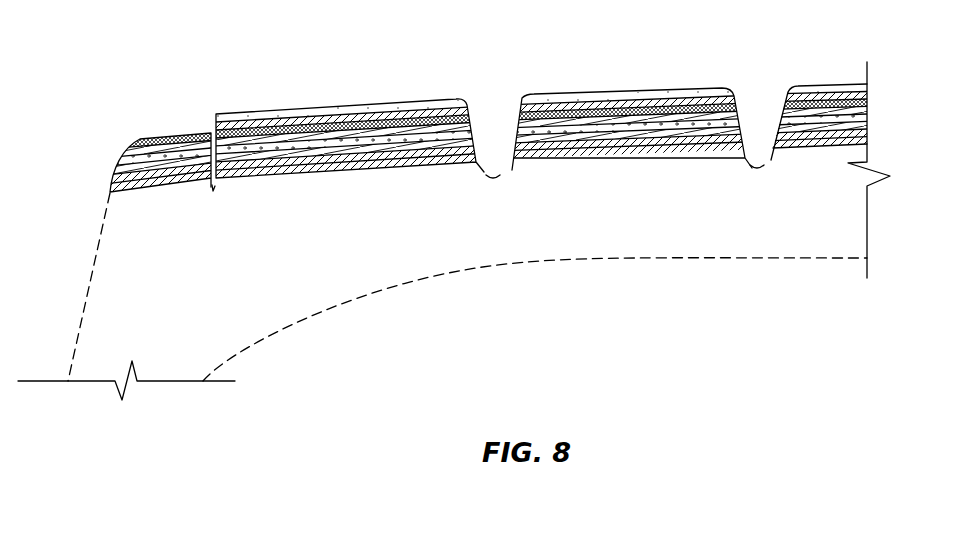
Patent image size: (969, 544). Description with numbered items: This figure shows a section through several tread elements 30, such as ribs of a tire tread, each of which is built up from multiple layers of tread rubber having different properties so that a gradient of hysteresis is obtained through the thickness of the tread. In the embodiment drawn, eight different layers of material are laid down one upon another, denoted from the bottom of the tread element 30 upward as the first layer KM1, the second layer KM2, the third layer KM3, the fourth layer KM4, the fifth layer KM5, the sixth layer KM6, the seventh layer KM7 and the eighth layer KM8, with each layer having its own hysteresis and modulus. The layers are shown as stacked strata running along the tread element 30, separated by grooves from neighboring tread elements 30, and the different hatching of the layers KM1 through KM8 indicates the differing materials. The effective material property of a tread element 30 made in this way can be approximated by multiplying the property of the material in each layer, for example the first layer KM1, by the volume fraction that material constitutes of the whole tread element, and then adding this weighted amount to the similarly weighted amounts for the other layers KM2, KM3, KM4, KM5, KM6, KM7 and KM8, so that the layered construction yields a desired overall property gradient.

The tread element 30 is at (452, 101).
The first layer KM1 is at (527, 158).
The second layer KM2 is at (582, 145).
The third layer KM3 is at (638, 134).
The fourth layer KM4 is at (705, 126).
The fifth layer KM5 is at (448, 127).
The sixth layer KM6 is at (362, 124).
The seventh layer KM7 is at (293, 122).
The eighth layer KM8 is at (225, 114).